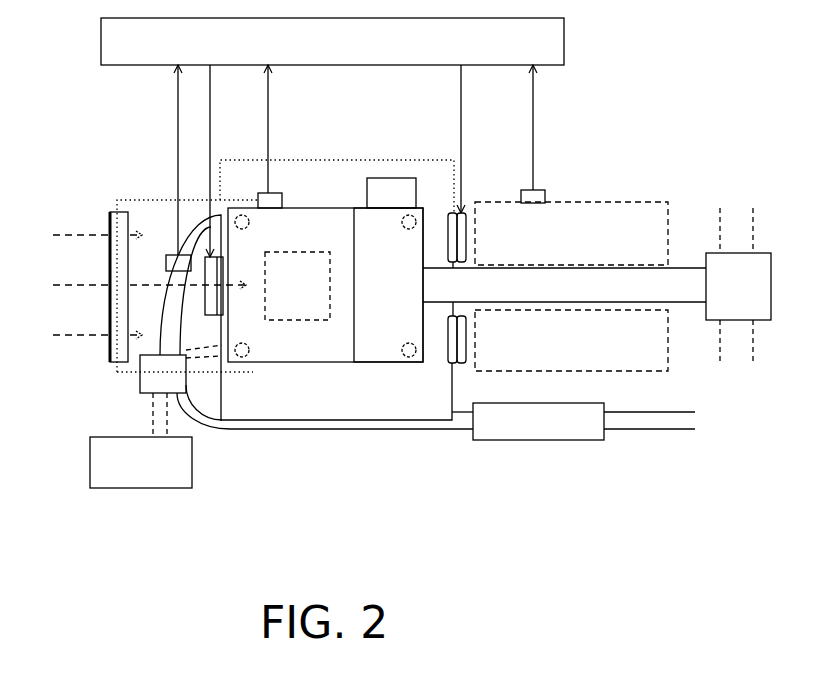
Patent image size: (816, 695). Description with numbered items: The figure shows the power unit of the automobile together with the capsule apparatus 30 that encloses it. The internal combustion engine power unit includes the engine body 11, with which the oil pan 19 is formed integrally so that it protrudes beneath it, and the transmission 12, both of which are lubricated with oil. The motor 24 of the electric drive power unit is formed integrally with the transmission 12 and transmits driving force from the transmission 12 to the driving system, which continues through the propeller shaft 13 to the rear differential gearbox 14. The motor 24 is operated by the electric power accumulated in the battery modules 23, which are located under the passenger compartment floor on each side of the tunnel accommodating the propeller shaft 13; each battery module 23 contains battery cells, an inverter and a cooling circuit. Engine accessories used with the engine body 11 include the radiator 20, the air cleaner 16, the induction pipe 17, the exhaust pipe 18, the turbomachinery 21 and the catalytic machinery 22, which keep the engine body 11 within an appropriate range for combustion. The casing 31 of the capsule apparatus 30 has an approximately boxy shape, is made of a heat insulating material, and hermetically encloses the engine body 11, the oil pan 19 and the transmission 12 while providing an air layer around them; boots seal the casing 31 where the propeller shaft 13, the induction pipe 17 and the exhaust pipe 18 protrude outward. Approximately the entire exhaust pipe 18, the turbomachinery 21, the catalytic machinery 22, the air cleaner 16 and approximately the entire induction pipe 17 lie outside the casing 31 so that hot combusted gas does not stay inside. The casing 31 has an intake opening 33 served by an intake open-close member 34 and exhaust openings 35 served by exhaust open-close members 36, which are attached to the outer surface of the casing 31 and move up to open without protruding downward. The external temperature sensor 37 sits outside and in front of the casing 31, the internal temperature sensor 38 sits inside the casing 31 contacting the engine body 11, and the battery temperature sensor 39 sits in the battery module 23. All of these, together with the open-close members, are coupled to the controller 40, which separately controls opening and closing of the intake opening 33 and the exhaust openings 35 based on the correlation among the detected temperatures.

The engine body 11 is at (319, 345).
The transmission 12 is at (396, 345).
The propeller shaft 13 is at (598, 303).
The rear differential gearbox 14 is at (706, 315).
The air cleaner 16 is at (192, 475).
The induction pipe 17 is at (167, 418).
The exhaust pipe 18 is at (441, 430).
The oil pan 19 is at (285, 322).
The radiator 20 is at (110, 252).
The turbomachinery 21 is at (140, 392).
The catalytic machinery 22 is at (540, 440).
The battery modules 23 is at (632, 210).
The motor 24 is at (409, 200).
The capsule apparatus 30 is at (690, 90).
The casing 31 is at (343, 413).
The intake opening 33 is at (230, 333).
The intake open-close member 34 is at (205, 295).
The exhaust opening 35 is at (463, 232).
The exhaust open-close member 36 is at (458, 253).
The external temperature sensor 37 is at (175, 253).
The internal temperature sensor 38 is at (258, 196).
The battery temperature sensor 39 is at (545, 193).
The controller 40 is at (566, 46).